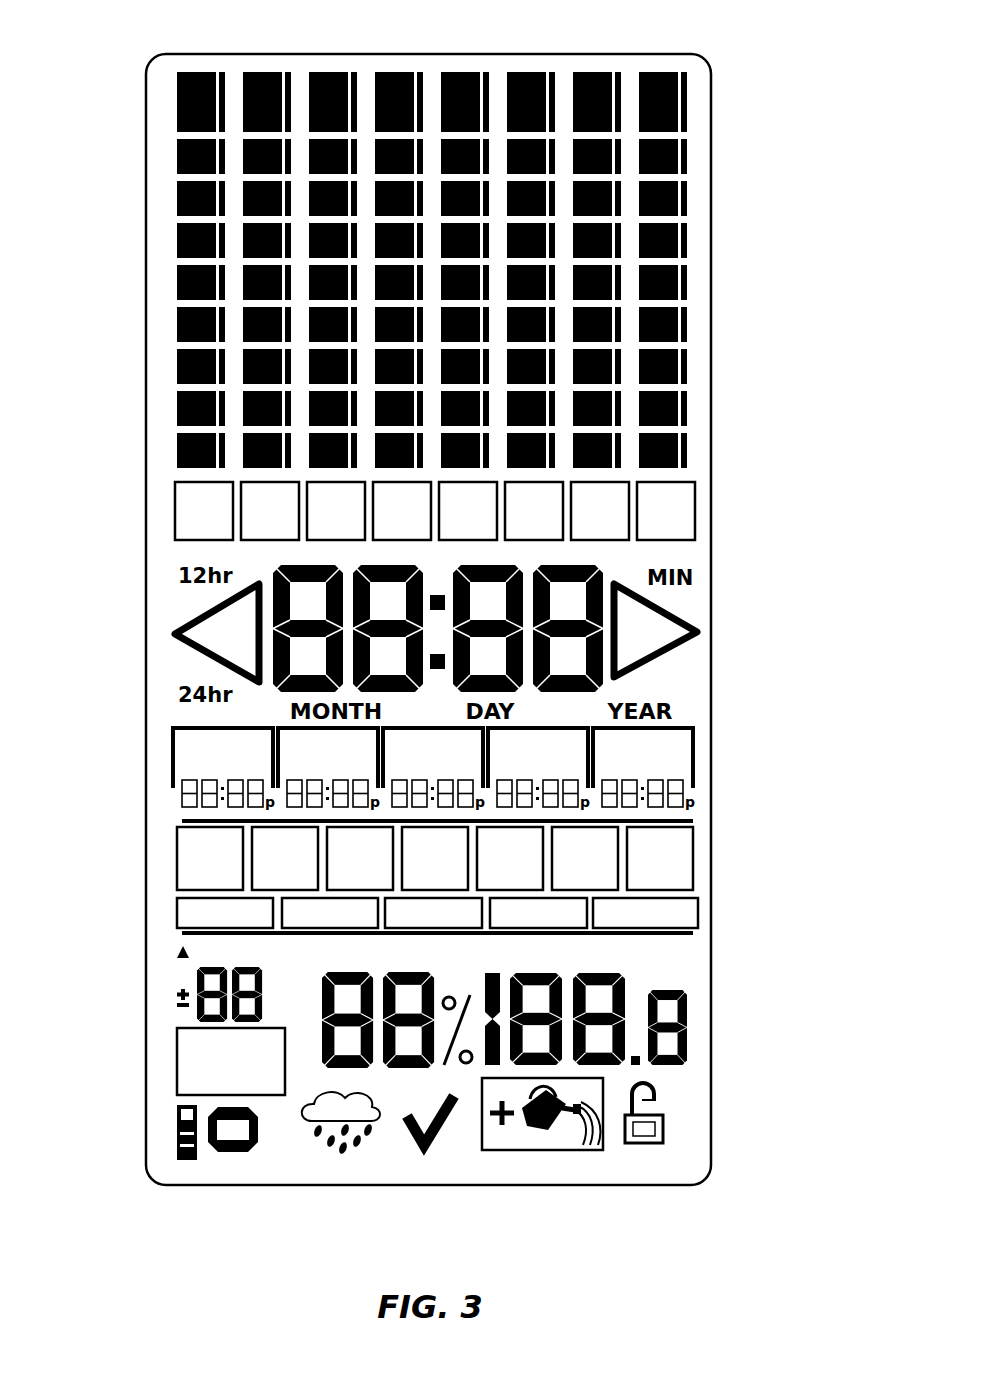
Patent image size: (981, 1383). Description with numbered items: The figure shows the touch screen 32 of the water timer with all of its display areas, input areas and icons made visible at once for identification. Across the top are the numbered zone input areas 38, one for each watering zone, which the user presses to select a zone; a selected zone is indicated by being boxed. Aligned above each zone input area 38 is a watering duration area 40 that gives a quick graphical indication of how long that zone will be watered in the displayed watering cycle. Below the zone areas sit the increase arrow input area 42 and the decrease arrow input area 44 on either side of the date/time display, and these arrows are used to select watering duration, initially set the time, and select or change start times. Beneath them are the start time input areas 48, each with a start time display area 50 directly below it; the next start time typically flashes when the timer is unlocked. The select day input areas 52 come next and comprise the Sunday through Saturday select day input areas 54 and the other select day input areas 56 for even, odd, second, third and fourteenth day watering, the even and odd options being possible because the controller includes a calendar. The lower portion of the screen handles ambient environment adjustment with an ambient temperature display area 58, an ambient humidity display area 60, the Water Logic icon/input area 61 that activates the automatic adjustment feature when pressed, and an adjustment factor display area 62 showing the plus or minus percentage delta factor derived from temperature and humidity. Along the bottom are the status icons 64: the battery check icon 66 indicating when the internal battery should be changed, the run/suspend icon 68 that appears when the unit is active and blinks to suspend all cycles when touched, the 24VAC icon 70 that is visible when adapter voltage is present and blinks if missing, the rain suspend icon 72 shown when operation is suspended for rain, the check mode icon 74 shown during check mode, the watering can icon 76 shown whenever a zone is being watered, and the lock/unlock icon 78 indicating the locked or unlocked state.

The touch screen 32 is at (728, 67).
The numbered zone input areas 38 is at (695, 498).
The watering duration area 40 is at (597, 72).
The increase arrow input area 42 is at (681, 611).
The decrease arrow input area 44 is at (196, 616).
The start time input areas 48 is at (684, 737).
The start time display area 50 is at (698, 798).
The select day input areas 52 is at (128, 828).
The Sunday through Saturday select day input areas 54 is at (710, 855).
The other select day input areas 56 is at (710, 910).
The ambient temperature display area 58 is at (687, 1012).
The ambient humidity display area 60 is at (382, 1068).
The Water Logic icon/input area 61 is at (185, 1055).
The adjustment factor display area 62 is at (197, 983).
The status icons 64 is at (730, 1107).
The battery check icon 66 is at (177, 1136).
The run/suspend icon 68 is at (226, 1153).
The 24VAC icon 70 is at (280, 1160).
The rain suspend icon 72 is at (345, 1153).
The check mode icon 74 is at (421, 1150).
The watering can icon 76 is at (535, 1151).
The lock/unlock icon 78 is at (641, 1144).